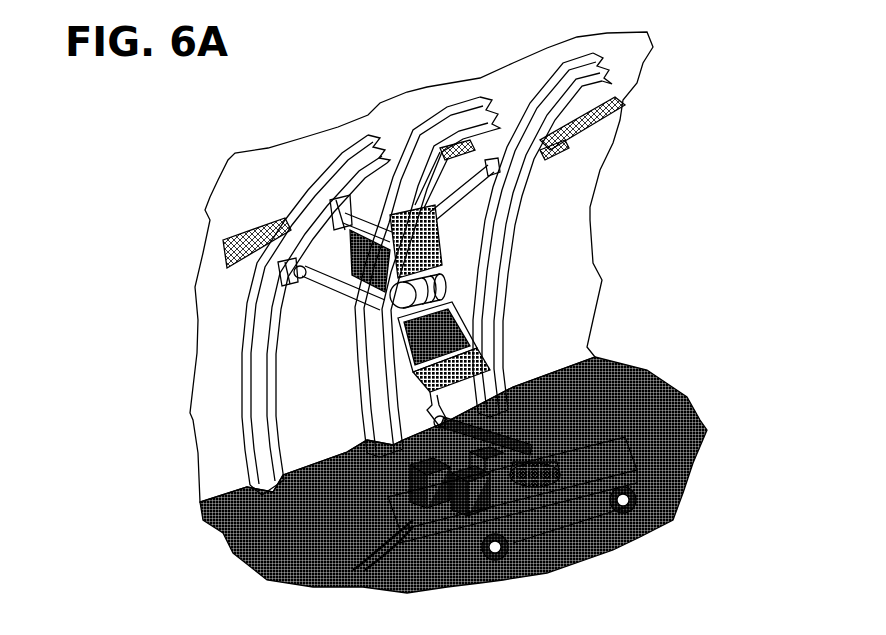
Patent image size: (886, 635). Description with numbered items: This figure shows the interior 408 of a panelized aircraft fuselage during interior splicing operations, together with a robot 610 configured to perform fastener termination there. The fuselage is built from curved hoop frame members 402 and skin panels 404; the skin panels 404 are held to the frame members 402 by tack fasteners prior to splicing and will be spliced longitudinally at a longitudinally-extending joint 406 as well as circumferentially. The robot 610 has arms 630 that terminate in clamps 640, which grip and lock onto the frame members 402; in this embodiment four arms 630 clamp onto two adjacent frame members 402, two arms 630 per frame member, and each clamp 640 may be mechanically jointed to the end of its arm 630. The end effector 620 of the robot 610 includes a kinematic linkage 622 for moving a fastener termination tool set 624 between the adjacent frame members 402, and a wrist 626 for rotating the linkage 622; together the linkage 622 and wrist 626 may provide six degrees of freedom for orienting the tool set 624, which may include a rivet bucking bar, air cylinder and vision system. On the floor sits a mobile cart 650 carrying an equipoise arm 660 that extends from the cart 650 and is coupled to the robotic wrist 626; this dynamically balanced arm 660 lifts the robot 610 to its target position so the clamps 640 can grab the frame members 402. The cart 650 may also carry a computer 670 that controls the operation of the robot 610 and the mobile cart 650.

The hoop frame members 402 is at (543, 82).
The skin panels 404 is at (420, 88).
The longitudinally-extending joint 406 is at (617, 108).
The interior 408 is at (657, 213).
The robot 610 is at (440, 265).
The end effector 620 is at (335, 235).
The kinematic linkage 622 is at (357, 270).
The fastener termination tool set 624 is at (342, 220).
The wrist 626 is at (447, 288).
The arms 630 is at (332, 292).
The clamps 640 is at (280, 283).
The mobile cart 650 is at (603, 460).
The equipoise arm 660 is at (523, 417).
The computer 670 is at (477, 347).